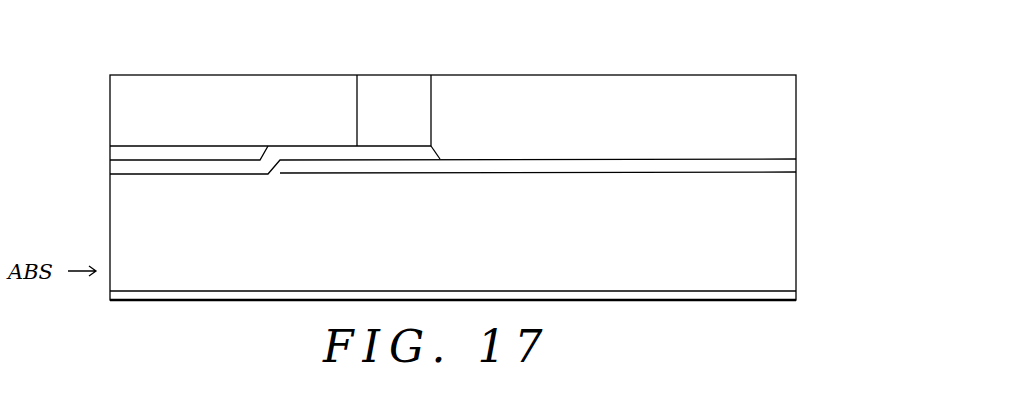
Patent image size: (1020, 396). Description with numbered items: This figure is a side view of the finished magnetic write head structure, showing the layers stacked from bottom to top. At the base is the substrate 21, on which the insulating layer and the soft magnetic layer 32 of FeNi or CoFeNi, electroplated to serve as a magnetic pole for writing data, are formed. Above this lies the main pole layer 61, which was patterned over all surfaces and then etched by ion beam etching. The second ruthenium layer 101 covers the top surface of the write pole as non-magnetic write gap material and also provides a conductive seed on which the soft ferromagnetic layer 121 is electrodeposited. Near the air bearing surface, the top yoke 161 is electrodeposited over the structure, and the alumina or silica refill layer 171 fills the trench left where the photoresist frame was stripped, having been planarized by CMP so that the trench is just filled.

The top yoke 161 is at (125, 107).
The refill layer 171 is at (378, 100).
The soft ferromagnetic layer 121 is at (125, 153).
The second ruthenium layer 101 is at (125, 168).
The main pole layer 61 is at (780, 160).
The soft magnetic layer 32 is at (780, 259).
The substrate 21 is at (780, 297).